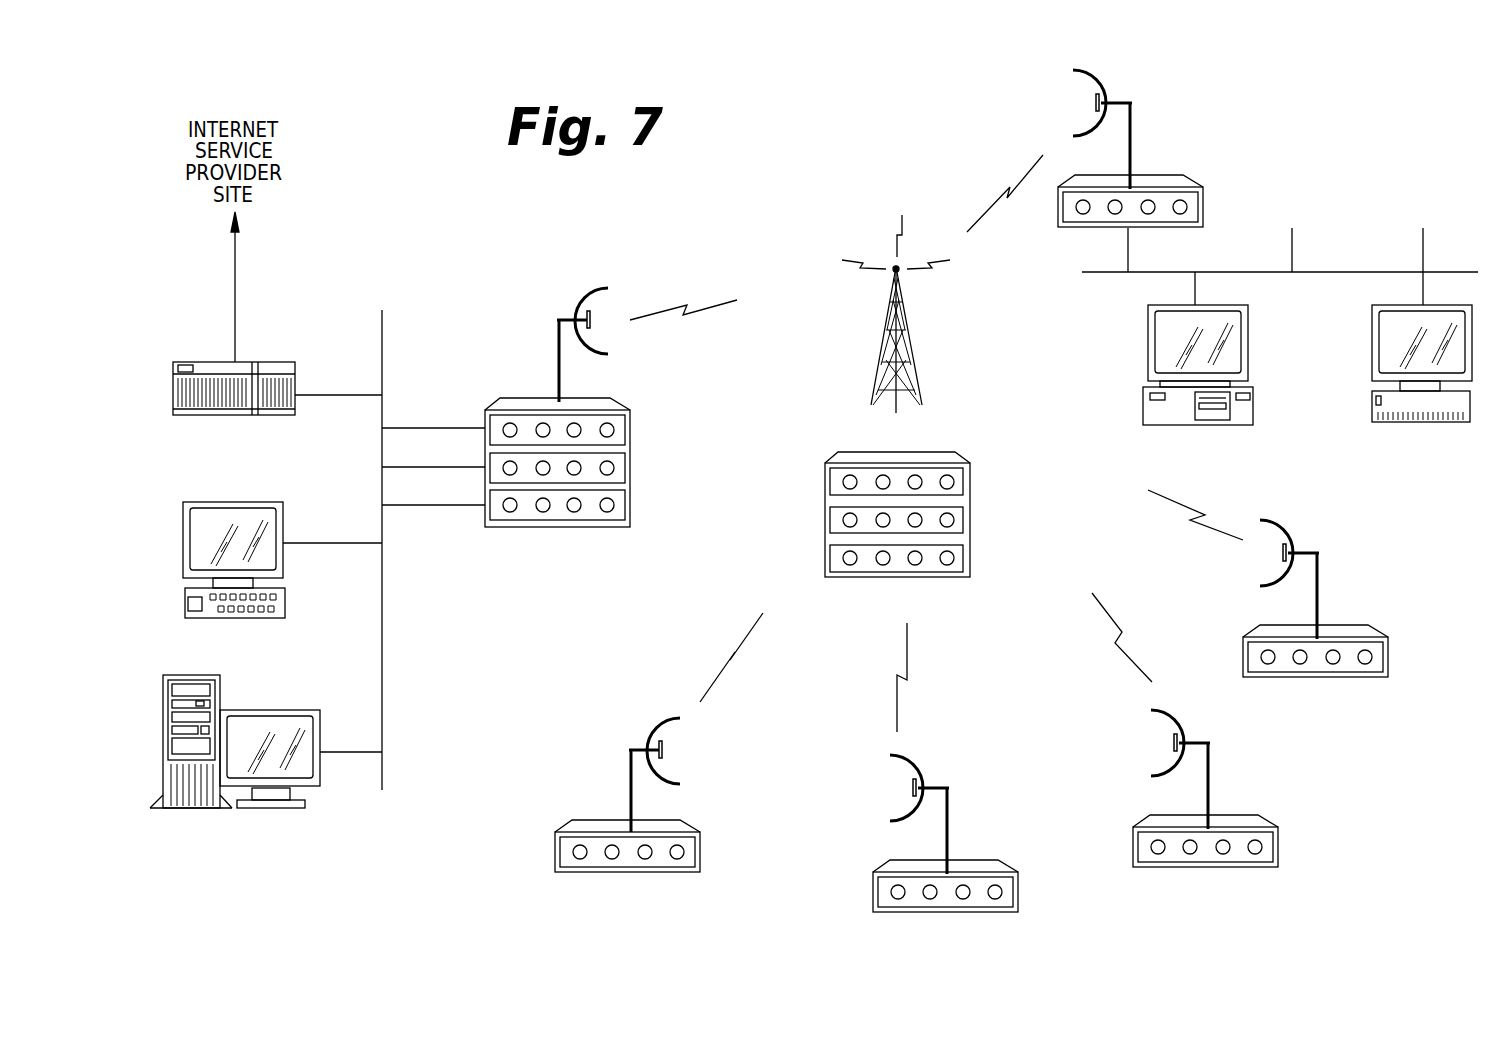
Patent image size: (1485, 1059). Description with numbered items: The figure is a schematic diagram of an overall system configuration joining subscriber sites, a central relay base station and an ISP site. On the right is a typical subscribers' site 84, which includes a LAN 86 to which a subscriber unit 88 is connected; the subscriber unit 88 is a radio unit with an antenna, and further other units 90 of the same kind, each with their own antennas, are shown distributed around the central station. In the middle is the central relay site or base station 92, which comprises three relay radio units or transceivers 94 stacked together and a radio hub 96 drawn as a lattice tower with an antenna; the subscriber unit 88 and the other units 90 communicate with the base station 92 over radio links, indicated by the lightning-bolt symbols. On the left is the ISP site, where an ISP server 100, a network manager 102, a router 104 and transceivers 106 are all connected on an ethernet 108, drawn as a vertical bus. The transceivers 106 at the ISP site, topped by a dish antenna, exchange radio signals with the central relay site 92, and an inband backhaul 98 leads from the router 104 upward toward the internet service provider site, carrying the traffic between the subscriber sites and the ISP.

The subscribers' site 84 is at (1346, 145).
The LAN 86 is at (1328, 272).
The subscriber unit 88 is at (1165, 177).
The other units 90 is at (555, 853).
The central relay site or base station 92 is at (852, 180).
The relay radio units or transceivers 94 is at (970, 485).
The radio hub 96 is at (912, 337).
The inband backhaul 98 is at (235, 272).
The ISP server 100 is at (277, 710).
The network manager 102 is at (277, 502).
The router 104 is at (275, 362).
The transceivers 106 is at (582, 527).
The ethernet 108 is at (384, 652).